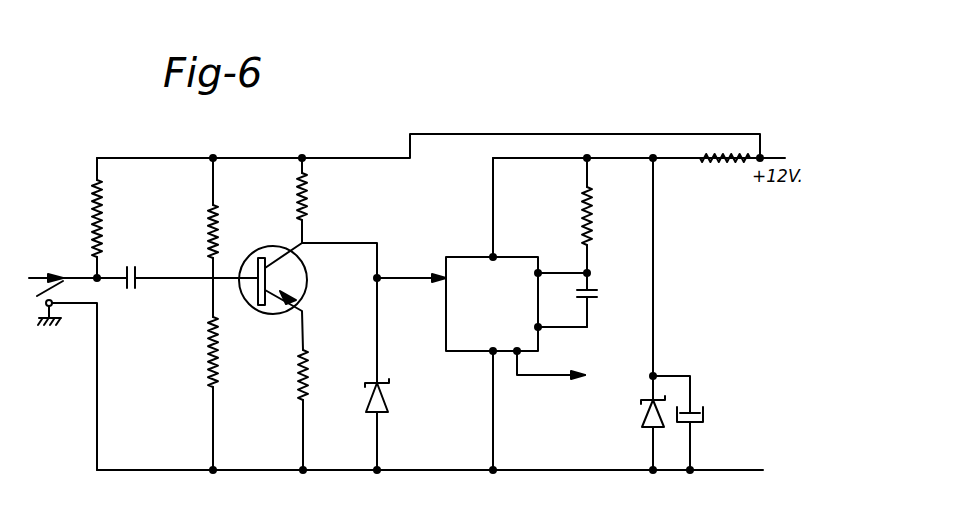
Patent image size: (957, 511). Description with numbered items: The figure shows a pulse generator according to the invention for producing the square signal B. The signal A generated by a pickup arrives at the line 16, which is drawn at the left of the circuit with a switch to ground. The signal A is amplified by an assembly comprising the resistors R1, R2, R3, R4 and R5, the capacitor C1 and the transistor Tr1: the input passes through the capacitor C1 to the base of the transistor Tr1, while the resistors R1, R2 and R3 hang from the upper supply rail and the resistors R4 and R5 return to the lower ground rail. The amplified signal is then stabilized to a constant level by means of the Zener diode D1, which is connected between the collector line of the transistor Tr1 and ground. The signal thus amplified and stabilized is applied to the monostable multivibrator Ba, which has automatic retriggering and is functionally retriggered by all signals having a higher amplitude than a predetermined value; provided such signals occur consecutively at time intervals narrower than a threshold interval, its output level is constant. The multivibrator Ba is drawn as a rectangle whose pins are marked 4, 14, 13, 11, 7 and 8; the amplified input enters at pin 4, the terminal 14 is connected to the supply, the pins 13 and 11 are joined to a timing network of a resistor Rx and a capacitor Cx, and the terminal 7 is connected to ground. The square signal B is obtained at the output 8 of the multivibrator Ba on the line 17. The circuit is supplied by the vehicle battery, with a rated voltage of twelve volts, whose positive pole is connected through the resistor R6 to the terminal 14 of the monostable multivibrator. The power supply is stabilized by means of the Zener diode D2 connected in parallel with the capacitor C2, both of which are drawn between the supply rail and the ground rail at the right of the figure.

The line 16 is at (52, 375).
The terminal 4 of timer Ba 4 is at (456, 283).
The terminal 14 is at (497, 271).
The terminal 13 of timer Ba 13 is at (552, 282).
The terminal 11 of timer Ba 11 is at (553, 325).
The terminal 7 is at (489, 400).
The output 8 is at (513, 343).
The line 17 is at (551, 376).
The signal A is at (143, 267).
The resistor R1 is at (100, 219).
The resistor R2 is at (216, 234).
The resistor R3 is at (306, 207).
The resistor R4 is at (209, 378).
The resistor R5 is at (299, 389).
The resistor R6 is at (720, 152).
The timing resistor Rx is at (591, 232).
The capacitor C1 is at (138, 283).
The capacitor C2 is at (700, 405).
The timing capacitor Cx is at (597, 294).
The transistor Tr1 is at (308, 278).
The Zener diode D1 is at (382, 382).
The Zener diode D2 is at (651, 425).
The monostable multivibrator Ba is at (516, 256).